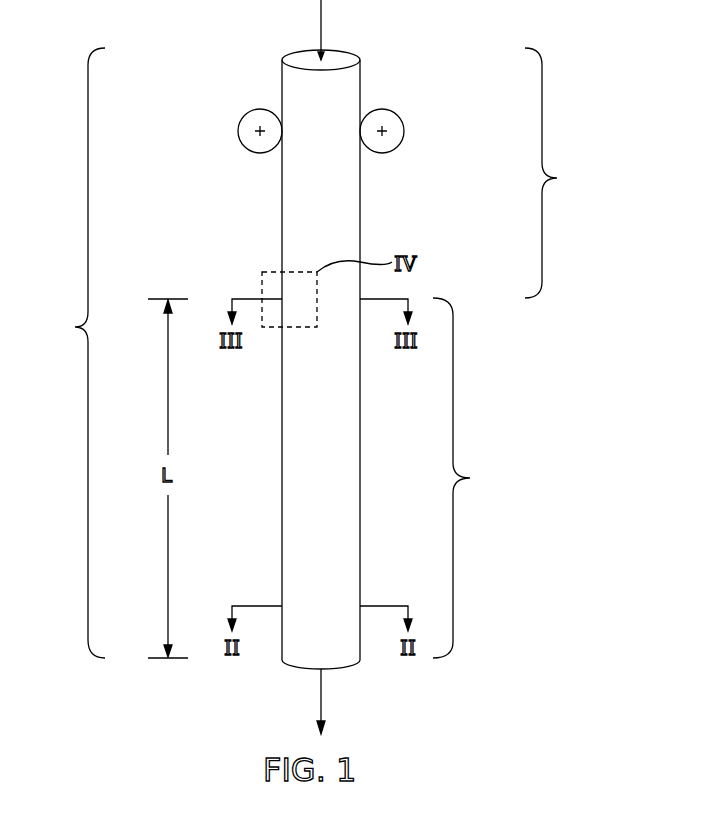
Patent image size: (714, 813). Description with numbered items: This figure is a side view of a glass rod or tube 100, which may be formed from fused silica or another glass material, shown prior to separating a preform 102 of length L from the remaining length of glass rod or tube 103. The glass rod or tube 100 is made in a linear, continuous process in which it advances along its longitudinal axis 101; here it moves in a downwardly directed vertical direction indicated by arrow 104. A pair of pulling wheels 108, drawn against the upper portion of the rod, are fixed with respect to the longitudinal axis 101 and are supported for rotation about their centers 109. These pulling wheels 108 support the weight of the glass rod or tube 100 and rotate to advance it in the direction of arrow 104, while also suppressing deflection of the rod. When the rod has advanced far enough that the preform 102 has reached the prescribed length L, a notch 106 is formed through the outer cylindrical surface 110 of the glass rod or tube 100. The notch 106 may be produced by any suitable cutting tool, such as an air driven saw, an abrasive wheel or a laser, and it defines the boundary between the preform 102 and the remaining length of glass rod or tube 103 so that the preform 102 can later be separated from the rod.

The glass rod or tube 100 is at (65, 353).
The longitudinal axis 101 is at (322, 15).
The preform 102 is at (474, 478).
The remaining length of glass rod or tube 103 is at (565, 173).
The arrow 104 is at (323, 688).
The notch 106 is at (297, 300).
The pulling wheels 108 is at (238, 127).
The centers 109 is at (257, 135).
The outer cylindrical surface 110 is at (360, 196).